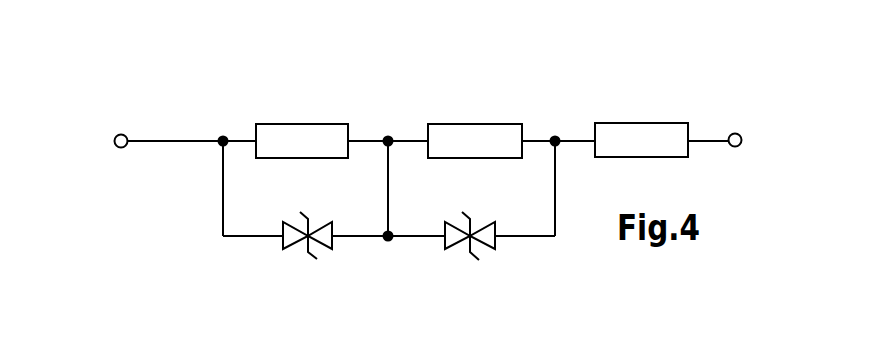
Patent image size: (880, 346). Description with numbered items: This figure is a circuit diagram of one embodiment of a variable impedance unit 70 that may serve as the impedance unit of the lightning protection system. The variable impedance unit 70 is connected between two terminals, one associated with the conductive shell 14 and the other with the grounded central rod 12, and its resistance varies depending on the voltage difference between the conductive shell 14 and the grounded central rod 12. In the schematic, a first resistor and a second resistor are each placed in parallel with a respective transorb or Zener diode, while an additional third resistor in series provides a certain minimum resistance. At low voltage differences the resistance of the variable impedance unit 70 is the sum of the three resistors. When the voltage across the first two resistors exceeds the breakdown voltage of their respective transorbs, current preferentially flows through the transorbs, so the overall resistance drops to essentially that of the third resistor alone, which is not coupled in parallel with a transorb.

The conductive shell 14 is at (115, 121).
The grounded central rod 12 is at (739, 123).
The variable impedance unit 70 is at (355, 92).